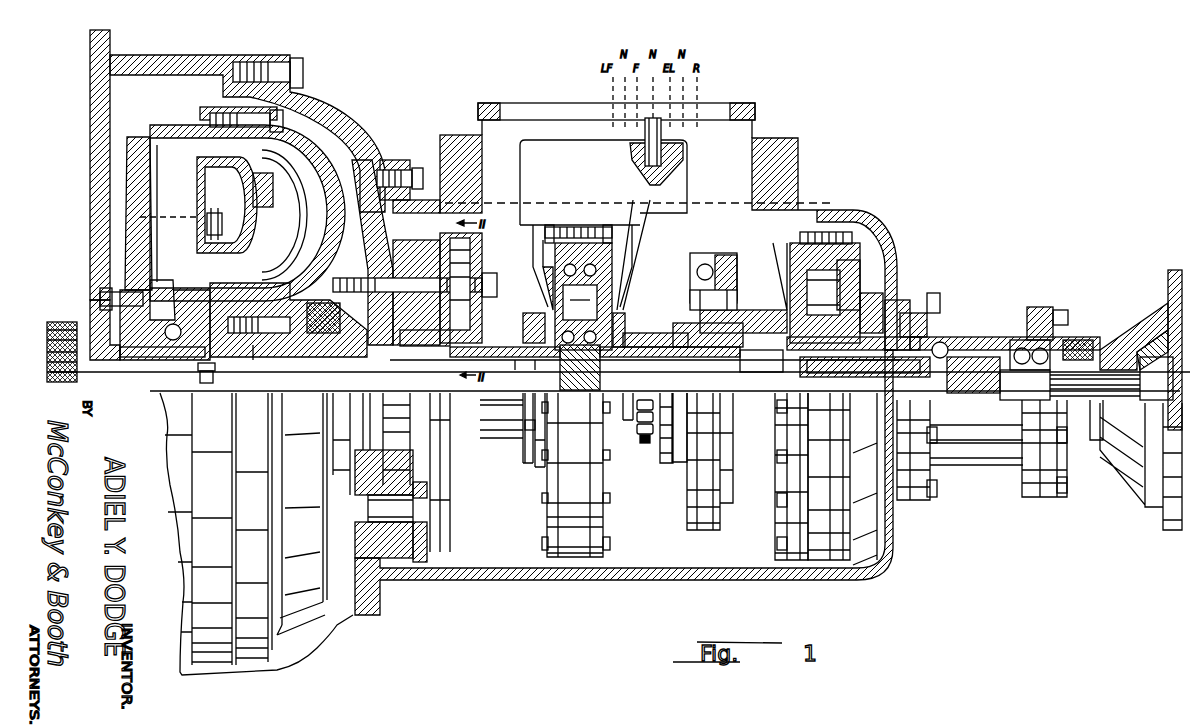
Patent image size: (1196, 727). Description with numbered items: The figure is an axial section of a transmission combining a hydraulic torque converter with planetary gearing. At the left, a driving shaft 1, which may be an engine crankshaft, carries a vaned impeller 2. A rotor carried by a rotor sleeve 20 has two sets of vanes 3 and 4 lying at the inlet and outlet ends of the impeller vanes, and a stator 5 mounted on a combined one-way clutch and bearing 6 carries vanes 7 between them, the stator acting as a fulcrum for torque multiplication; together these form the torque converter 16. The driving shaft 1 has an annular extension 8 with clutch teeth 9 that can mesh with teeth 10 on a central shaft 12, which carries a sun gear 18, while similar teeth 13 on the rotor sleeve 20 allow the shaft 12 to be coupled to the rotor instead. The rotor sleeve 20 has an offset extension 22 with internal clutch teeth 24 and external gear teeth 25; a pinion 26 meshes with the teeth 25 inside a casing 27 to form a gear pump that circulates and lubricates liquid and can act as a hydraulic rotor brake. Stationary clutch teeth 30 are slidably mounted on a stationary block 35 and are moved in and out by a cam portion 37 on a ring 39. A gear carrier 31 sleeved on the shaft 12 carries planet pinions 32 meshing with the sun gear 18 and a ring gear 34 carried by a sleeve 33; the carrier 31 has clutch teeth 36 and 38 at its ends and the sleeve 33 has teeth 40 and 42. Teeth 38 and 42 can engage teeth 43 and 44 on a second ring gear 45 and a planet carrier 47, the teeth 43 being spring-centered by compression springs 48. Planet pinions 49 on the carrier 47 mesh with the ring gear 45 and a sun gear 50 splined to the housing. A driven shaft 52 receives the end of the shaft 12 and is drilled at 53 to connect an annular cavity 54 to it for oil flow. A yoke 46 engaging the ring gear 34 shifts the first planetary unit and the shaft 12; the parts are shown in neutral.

The driving shaft 1 is at (63, 326).
The vaned impeller 2 is at (134, 192).
The rotor vanes 3 is at (251, 153).
The rotor vanes 4 is at (189, 244).
The stator 5 is at (276, 200).
The combined one-way clutch and bearing 6 is at (238, 360).
The stator vanes 7 is at (264, 172).
The annular extension 8 is at (135, 366).
The clutch teeth 9 is at (177, 363).
The teeth 10 is at (208, 384).
The central shaft 12 is at (320, 378).
The teeth 13 is at (253, 367).
The hydraulic torque converter 16 is at (175, 122).
The sun gear 18 is at (630, 320).
The rotor sleeve 20 is at (287, 360).
The offset extension 22 is at (620, 375).
The internal clutch teeth 24 is at (354, 324).
The external gear teeth 25 is at (405, 263).
The pinion 26 is at (427, 572).
The casing 27 is at (435, 548).
The stationary clutch teeth 30 is at (478, 330).
The gear carrier 31 is at (537, 372).
The planet pinions 32 is at (617, 267).
The ring gear sleeve 33 is at (512, 372).
The ring gear 34 is at (577, 228).
The stationary block 35 is at (420, 170).
The clutch teeth 36 is at (421, 344).
The cam portion 37 is at (482, 235).
The clutch teeth 38 is at (750, 350).
The ring 39 is at (482, 254).
The clutch teeth 40 is at (470, 343).
The clutch teeth 42 is at (643, 340).
The teeth 43 is at (699, 333).
The teeth 44 is at (748, 340).
The ring gear 45 is at (790, 248).
The yoke 46 is at (637, 240).
The planet carrier 47 is at (790, 268).
The compression springs 48 is at (702, 257).
The planet pinions 49 is at (835, 262).
The sun gear 50 is at (860, 308).
The driven shaft 52 is at (1115, 345).
The bore 53 is at (968, 335).
The annular cavity 54 is at (942, 342).